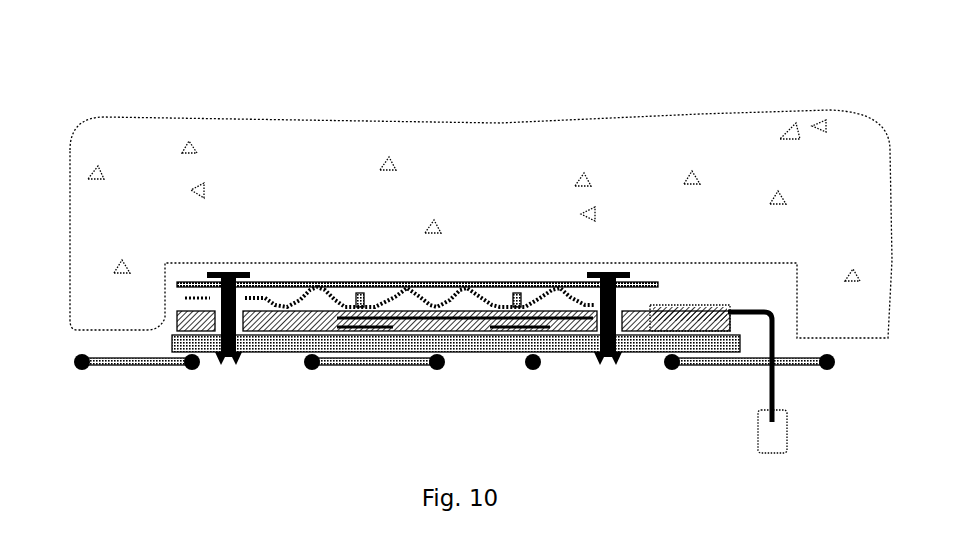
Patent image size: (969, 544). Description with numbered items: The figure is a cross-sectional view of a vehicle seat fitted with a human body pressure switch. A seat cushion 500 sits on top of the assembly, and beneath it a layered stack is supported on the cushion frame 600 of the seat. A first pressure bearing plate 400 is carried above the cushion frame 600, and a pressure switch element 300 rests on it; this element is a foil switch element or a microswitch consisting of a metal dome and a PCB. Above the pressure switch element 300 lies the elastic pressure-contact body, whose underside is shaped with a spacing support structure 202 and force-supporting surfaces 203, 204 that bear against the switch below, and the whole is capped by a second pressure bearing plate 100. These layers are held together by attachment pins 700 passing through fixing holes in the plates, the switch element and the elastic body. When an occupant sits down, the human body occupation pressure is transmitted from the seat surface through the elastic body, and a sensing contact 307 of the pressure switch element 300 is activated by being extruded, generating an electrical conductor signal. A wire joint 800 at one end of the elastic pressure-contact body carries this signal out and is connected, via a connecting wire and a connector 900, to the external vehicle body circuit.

The seat cushion 500 is at (580, 123).
The second pressure bearing plate 100 is at (291, 281).
The spacing support structure 202 is at (335, 300).
The force-supporting surface 203 is at (500, 300).
The second electrode protrusion 204 is at (528, 297).
The pressure switch element 300 is at (172, 323).
The sensing contact 307 is at (508, 340).
The first pressure bearing plate 400 is at (475, 352).
The cushion frame 600 is at (158, 373).
The attachment pin 700 is at (612, 272).
The wire joint 800 is at (707, 306).
The connector 900 is at (758, 430).